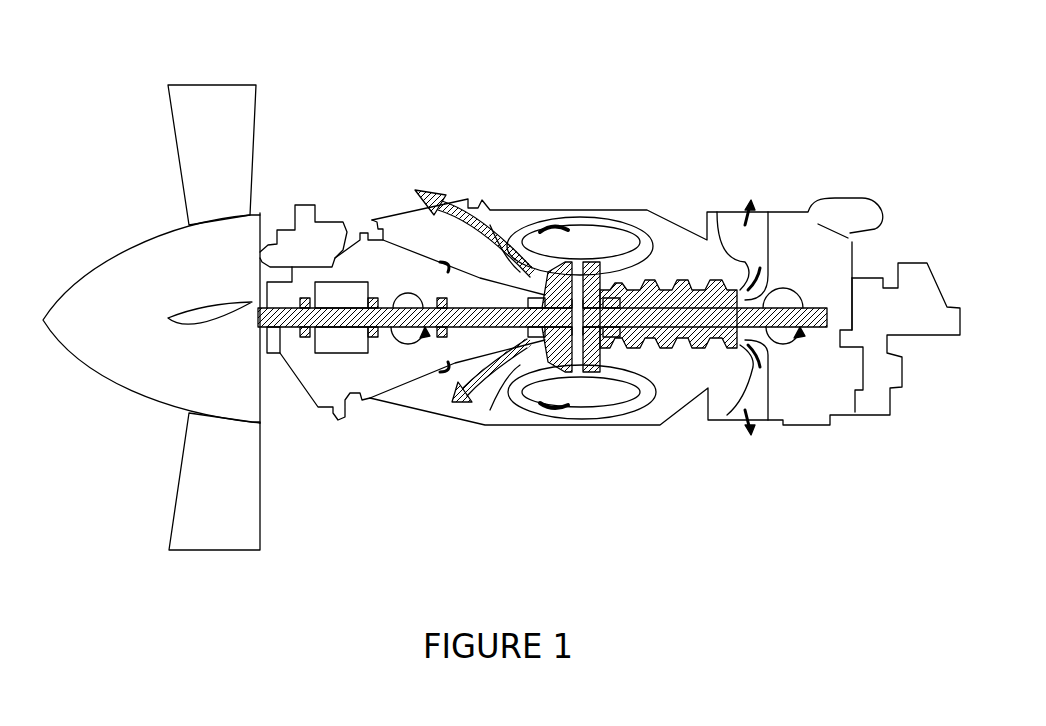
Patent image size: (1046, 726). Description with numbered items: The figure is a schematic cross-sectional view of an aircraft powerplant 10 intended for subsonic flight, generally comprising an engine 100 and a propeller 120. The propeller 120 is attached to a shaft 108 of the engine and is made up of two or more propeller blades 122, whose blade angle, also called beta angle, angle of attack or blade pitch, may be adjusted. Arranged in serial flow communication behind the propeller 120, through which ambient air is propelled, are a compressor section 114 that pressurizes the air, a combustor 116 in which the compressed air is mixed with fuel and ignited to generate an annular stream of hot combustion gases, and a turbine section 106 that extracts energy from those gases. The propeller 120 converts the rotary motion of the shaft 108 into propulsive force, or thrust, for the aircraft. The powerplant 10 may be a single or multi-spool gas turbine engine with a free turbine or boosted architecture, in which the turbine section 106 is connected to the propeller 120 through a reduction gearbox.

The aircraft powerplant 10 is at (706, 42).
The engine 100 is at (905, 183).
The turbine section 106 is at (458, 348).
The shaft 108 is at (280, 353).
The compressor section 114 is at (678, 368).
The combustor 116 is at (590, 233).
The propeller 120 is at (132, 210).
The propeller blades 122 is at (240, 120).